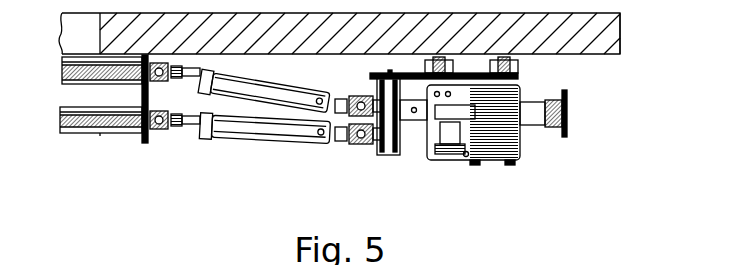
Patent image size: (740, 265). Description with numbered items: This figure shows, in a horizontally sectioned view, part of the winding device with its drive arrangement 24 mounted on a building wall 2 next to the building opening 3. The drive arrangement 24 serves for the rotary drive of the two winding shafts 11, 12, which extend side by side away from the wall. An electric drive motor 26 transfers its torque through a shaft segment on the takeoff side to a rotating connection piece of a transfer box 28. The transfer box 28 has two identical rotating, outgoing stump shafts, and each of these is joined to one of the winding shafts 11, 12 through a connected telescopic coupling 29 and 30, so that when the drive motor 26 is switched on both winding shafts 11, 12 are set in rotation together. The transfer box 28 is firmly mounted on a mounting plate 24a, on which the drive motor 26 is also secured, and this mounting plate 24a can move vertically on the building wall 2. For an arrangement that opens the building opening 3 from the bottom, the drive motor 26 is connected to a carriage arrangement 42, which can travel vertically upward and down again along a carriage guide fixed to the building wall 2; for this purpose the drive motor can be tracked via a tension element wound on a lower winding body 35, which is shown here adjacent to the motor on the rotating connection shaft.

The building wall 2 is at (616, 36).
The building opening 3 is at (72, 46).
The winding shaft 11 is at (125, 134).
The winding shaft 12 is at (62, 86).
The drive arrangement 24 is at (275, 165).
The mounting plate 24a is at (370, 76).
The drive motor 26 is at (490, 172).
The transfer box 28 is at (395, 158).
The telescopic coupling 29 is at (233, 143).
The telescopic coupling 30 is at (230, 98).
The lower winding body 35 is at (533, 118).
The carriage arrangement 42 is at (534, 70).